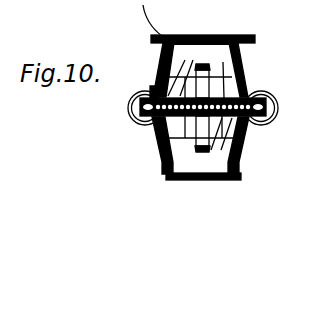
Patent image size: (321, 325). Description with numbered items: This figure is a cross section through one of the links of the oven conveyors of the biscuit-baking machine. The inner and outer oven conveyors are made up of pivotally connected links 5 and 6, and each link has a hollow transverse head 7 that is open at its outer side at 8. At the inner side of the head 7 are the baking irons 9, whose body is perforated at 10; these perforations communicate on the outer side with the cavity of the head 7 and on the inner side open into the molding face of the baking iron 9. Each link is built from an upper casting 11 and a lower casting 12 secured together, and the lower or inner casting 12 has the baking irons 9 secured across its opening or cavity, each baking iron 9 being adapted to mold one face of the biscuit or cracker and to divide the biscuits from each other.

The link 5 is at (148, 18).
The link 6 is at (168, 179).
The hollow transverse head 7 is at (246, 36).
The opening 8 is at (215, 43).
The baking iron 9 is at (183, 150).
The perforation 10 is at (200, 106).
The upper casting 11 is at (239, 51).
The lower casting 12 is at (247, 81).